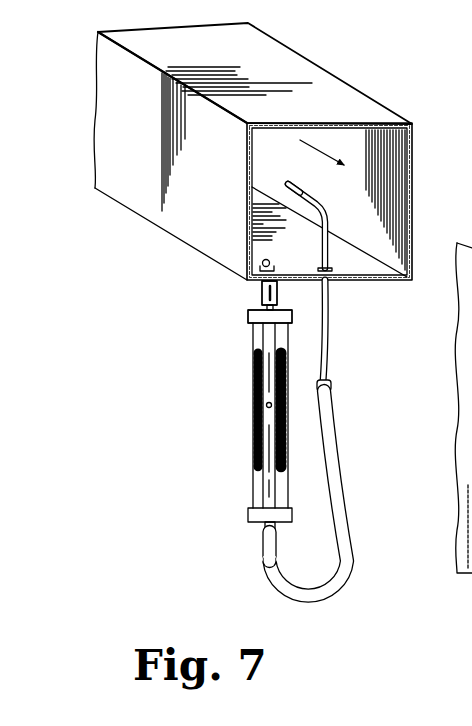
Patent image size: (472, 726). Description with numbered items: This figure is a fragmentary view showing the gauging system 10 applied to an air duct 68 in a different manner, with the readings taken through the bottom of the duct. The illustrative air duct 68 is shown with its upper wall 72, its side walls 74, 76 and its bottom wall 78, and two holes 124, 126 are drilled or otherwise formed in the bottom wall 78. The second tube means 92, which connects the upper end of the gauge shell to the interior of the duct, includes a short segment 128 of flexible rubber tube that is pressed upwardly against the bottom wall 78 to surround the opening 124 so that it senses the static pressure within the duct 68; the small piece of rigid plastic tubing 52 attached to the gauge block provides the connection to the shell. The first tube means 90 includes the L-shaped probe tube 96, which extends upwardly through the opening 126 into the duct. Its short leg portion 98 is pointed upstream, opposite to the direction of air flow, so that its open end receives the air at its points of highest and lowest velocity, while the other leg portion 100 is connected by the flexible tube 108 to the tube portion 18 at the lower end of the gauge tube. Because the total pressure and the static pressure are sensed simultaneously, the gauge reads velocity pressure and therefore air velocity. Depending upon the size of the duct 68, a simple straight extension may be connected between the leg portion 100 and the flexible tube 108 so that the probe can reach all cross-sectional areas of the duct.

The gauging system 10 is at (240, 462).
The lower end portion 18 is at (265, 524).
The rigid plastic tubing 52 is at (267, 313).
The air duct 68 is at (113, 125).
The upper wall 72 is at (240, 58).
The side wall 74 is at (225, 213).
The side wall 76 is at (388, 190).
The bottom wall 78 is at (392, 281).
The first tube means 90 is at (253, 560).
The second tube means 92 is at (240, 285).
The L-shaped probe tube 96 is at (328, 208).
The leg portion 98 is at (302, 188).
The leg portion 100 is at (328, 338).
The flexible tube 108 is at (355, 557).
The hole 124 is at (264, 262).
The hole 126 is at (349, 281).
The short segment of flexible rubber tube 128 is at (268, 293).